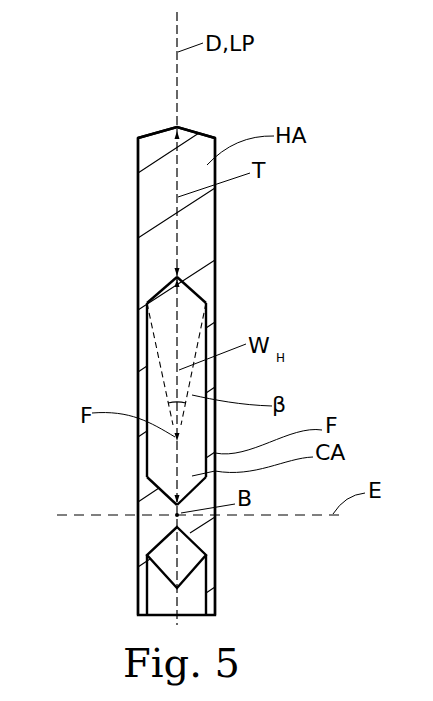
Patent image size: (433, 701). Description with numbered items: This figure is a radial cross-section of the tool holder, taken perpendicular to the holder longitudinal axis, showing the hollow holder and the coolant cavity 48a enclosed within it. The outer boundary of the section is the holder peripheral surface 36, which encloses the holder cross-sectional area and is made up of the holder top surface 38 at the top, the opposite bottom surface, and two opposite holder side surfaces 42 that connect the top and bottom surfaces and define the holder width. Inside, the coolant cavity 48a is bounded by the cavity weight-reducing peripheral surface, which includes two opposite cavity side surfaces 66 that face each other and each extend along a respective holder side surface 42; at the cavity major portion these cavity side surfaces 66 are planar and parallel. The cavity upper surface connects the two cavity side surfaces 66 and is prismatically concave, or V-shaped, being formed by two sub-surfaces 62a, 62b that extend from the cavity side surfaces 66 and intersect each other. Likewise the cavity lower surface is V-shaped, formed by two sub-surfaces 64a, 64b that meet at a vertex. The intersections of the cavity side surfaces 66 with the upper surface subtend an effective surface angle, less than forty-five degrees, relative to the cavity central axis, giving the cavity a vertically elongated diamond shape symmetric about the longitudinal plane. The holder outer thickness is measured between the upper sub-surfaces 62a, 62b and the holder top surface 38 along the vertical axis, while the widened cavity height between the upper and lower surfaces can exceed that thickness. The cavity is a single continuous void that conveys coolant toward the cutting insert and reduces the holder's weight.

The holder peripheral surface 36 is at (138, 190).
The holder top surface 38 is at (193, 133).
The holder side surfaces 42 is at (137, 272).
The cavity upper sub-surface 62a is at (152, 292).
The cavity upper sub-surface 62b is at (201, 290).
The cavity side surfaces 66 is at (203, 319).
The coolant cavity 48a is at (160, 462).
The cavity lower sub-surface 64a is at (157, 485).
The cavity lower sub-surface 64b is at (202, 488).